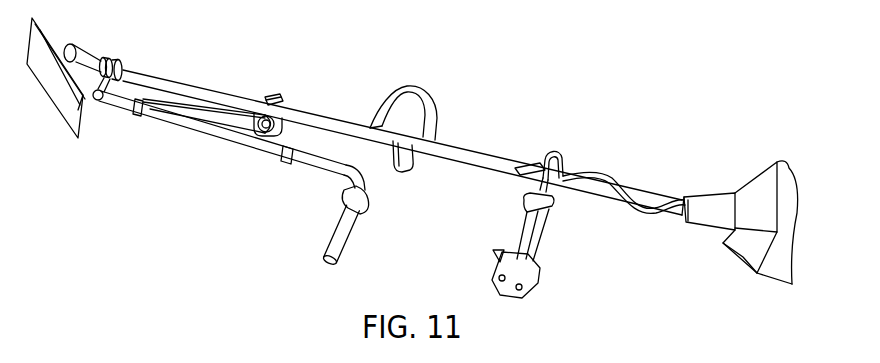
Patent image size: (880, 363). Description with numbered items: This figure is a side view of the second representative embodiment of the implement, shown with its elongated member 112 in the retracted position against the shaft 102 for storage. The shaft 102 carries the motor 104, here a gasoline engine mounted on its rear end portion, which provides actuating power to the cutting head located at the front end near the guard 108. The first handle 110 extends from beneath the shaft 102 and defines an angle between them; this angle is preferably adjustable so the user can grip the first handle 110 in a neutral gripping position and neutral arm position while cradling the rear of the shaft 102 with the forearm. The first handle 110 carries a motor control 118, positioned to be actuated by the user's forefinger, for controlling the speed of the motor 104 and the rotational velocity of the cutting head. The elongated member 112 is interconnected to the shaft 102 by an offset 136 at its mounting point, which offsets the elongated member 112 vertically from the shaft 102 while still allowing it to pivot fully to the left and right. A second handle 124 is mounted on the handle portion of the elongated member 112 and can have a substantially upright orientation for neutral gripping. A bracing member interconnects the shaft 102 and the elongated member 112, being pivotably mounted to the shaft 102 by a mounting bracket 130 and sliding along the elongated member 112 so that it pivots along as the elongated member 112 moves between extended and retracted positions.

The shaft 102 is at (319, 122).
The motor 104 is at (760, 193).
The guard 108 is at (74, 125).
The first handle 110 is at (530, 275).
The elongated member 112 is at (212, 130).
The motor control 118 is at (535, 167).
The second handle 124 is at (342, 232).
The mounting bracket 130 is at (277, 104).
The offset 136 is at (118, 80).